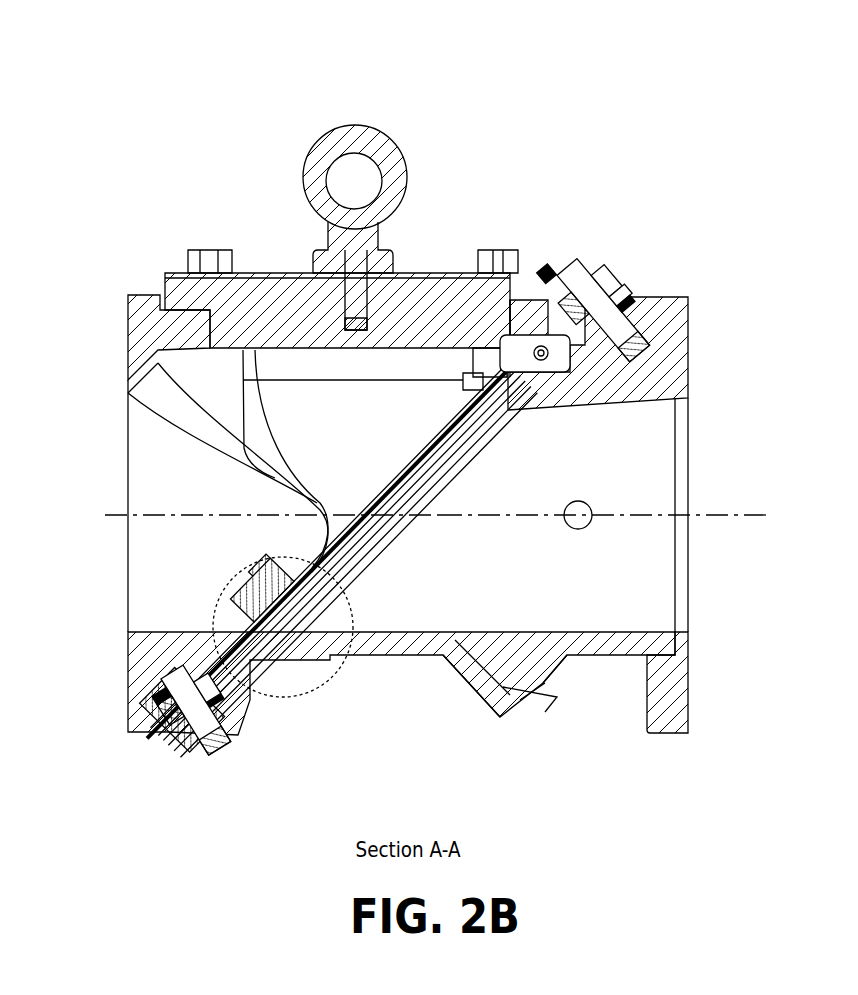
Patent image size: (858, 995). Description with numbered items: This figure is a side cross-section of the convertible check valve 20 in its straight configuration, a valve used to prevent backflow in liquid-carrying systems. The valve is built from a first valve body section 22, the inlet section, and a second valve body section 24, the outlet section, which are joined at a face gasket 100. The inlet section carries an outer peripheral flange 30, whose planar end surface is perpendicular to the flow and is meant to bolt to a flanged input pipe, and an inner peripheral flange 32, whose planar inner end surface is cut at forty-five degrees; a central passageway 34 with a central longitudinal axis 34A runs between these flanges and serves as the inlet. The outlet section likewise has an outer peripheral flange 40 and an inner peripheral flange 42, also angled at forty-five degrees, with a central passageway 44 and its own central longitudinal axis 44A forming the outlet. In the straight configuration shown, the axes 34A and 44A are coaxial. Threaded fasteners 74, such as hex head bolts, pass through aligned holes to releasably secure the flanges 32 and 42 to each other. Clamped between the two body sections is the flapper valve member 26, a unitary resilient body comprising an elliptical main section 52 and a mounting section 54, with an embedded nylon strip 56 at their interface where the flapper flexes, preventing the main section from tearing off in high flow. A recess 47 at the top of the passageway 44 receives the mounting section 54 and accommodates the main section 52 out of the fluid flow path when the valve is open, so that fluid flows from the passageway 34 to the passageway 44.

The convertible check valve 20 is at (215, 106).
The first valve body section 22 is at (428, 722).
The second valve body section 24 is at (413, 252).
The flapper valve member 26 is at (348, 493).
The peripheral flange 30 is at (670, 735).
The peripheral flange 32 is at (203, 752).
The central passageway 34 is at (682, 446).
The central longitudinal axis 34A is at (757, 502).
The peripheral flange 40 is at (133, 292).
The peripheral flange 42 is at (602, 283).
The central passageway 44 is at (125, 567).
The central longitudinal axis 44A is at (115, 512).
The recess 47 is at (326, 348).
The main section 52 is at (364, 548).
The mounting section 54 is at (544, 288).
The nylon strip 56 is at (511, 345).
The threaded fasteners 74 is at (624, 327).
The face gasket 100 is at (620, 294).